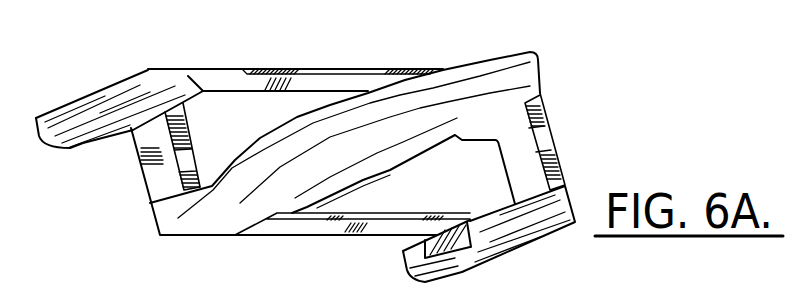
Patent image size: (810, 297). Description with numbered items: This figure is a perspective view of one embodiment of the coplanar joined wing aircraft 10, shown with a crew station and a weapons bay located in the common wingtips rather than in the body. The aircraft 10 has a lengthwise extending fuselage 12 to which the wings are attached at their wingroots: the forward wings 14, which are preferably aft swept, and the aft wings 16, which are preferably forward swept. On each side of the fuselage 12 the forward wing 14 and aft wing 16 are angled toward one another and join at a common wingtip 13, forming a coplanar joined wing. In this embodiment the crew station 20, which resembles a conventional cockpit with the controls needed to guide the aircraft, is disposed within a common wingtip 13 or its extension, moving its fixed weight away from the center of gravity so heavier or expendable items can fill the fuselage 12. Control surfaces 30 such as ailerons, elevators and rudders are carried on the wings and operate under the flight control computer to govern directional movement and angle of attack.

The joined wing aircraft 10 is at (190, 253).
The fuselage 12 is at (472, 85).
The common wingtip 13 is at (140, 89).
The forward wings 14 is at (153, 143).
The aft wings 16 is at (311, 80).
The crew station 20 is at (460, 242).
The control surfaces 30 is at (283, 70).